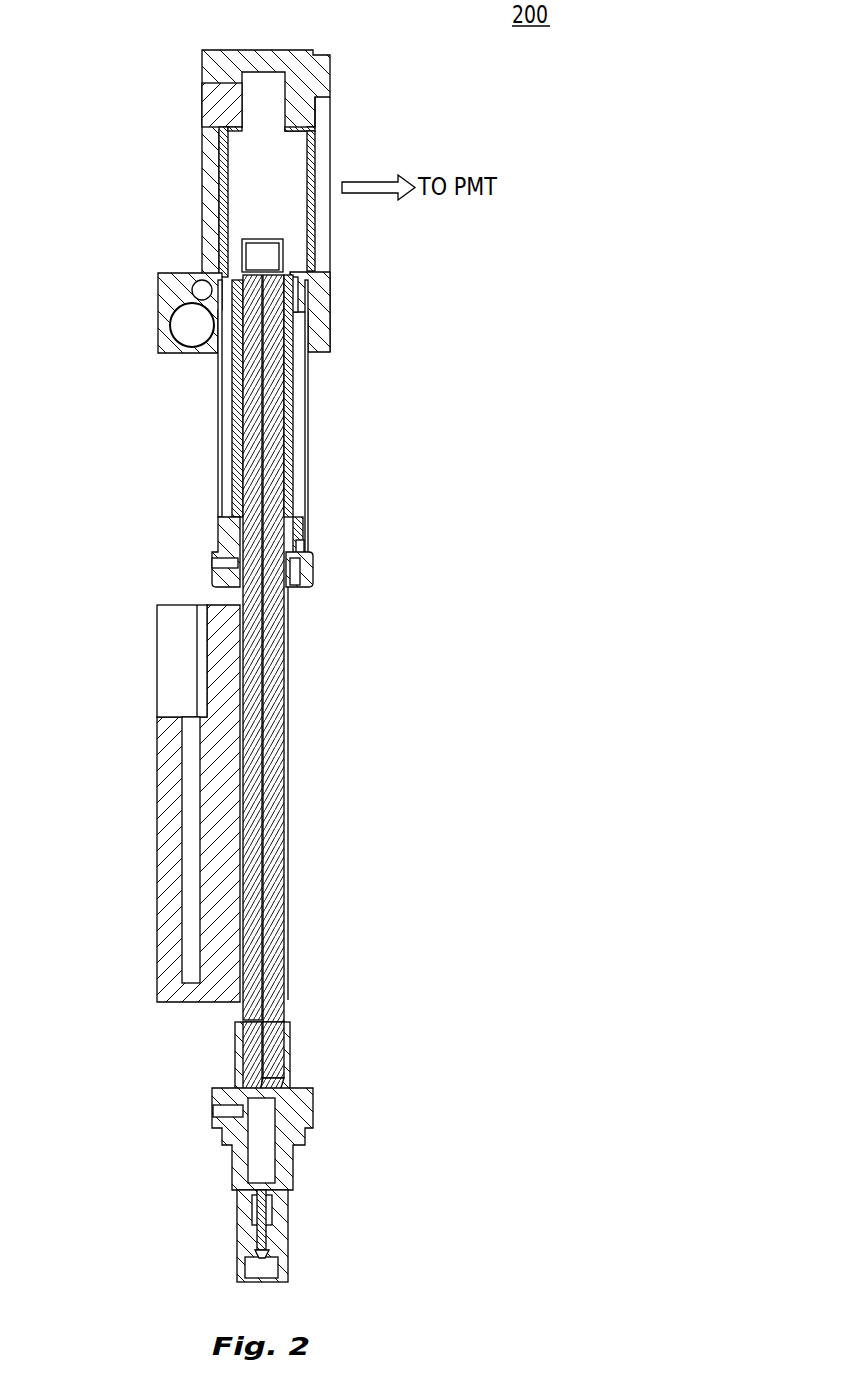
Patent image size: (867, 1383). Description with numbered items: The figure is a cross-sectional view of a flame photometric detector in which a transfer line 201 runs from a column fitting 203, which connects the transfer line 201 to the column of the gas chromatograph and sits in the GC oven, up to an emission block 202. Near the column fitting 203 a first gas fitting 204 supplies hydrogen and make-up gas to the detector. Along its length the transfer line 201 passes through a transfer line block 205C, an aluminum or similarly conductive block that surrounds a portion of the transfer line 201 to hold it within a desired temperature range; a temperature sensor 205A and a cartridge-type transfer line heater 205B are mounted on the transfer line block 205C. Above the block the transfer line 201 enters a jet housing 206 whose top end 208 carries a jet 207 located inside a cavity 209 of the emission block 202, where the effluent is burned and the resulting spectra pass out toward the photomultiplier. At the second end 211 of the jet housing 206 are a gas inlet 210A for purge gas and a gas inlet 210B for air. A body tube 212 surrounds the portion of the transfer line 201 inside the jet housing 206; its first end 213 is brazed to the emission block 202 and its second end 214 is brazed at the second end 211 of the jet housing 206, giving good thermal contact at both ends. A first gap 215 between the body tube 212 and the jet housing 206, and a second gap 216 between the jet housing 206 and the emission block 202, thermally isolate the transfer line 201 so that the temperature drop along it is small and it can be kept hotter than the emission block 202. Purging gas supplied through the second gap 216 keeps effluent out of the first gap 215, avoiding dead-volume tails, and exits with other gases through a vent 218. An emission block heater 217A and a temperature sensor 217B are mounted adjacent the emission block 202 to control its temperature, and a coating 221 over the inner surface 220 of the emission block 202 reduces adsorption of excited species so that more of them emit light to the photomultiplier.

The transfer line 201 is at (282, 857).
The emission block 202 is at (293, 53).
The column fitting 203 is at (293, 1270).
The first gas fitting 204 is at (214, 1108).
The temperature sensor 205A is at (167, 652).
The transfer line heater 205B is at (188, 792).
The transfer line block 205C is at (165, 852).
The jet housing 206 is at (292, 412).
The jet 207 is at (250, 240).
The top end 208 is at (240, 290).
The cavity 209 is at (240, 160).
The gas inlet 210A is at (292, 590).
The gas inlet 210B is at (215, 566).
The second end 211 is at (302, 535).
The body tube 212 is at (307, 468).
The first end 213 is at (313, 305).
The second end 214 is at (303, 552).
The first gap 215 is at (230, 445).
The second gap 216 is at (228, 295).
The emission block heater 217A is at (182, 330).
The temperature sensor 217B is at (200, 292).
The vent 218 is at (205, 83).
The inner surface 220 is at (313, 138).
The coating 221 is at (312, 173).